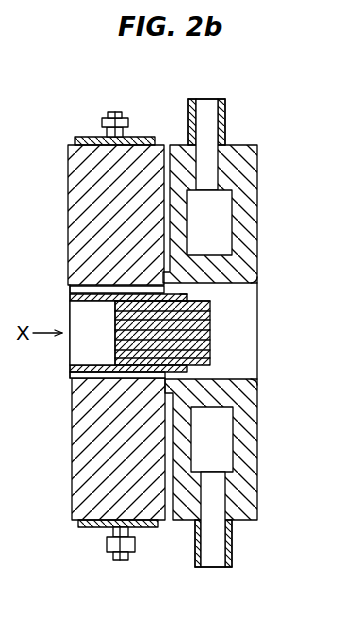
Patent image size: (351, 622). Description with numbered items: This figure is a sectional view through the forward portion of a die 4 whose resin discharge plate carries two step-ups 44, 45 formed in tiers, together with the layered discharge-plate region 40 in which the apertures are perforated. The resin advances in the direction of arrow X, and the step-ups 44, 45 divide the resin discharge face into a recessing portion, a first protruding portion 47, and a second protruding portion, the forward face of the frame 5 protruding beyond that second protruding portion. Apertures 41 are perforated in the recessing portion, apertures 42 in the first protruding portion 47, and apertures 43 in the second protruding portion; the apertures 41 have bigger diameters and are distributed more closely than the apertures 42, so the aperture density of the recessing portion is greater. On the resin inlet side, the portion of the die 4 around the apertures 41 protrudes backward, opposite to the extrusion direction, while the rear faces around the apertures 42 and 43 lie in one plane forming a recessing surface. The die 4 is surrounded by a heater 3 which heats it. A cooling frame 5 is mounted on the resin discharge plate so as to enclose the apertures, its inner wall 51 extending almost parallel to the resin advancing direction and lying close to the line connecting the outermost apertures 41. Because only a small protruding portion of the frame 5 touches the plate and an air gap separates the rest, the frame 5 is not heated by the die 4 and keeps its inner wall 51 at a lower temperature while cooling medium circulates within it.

The heater 3 is at (142, 145).
The die 4 is at (92, 200).
The cooling frame 5 is at (240, 160).
The laminated stack 40 is at (208, 333).
The apertures 41 is at (77, 291).
The apertures 42 is at (115, 302).
The apertures 43 is at (115, 331).
The step-up 44 is at (187, 296).
The step-up 45 is at (210, 318).
The first protruding portion 47 is at (207, 302).
The inner wall 51 is at (257, 283).